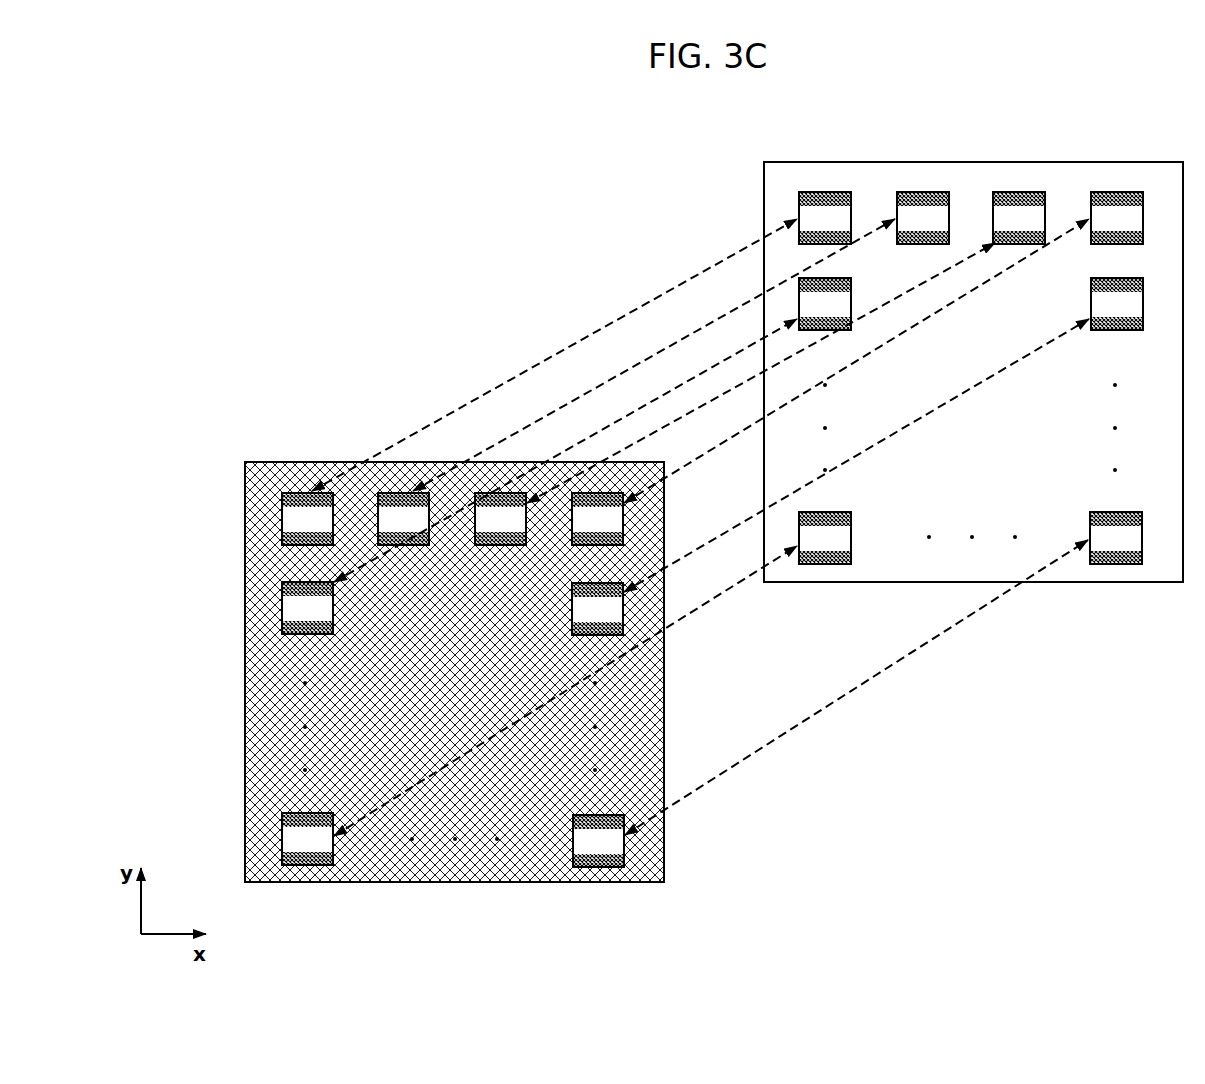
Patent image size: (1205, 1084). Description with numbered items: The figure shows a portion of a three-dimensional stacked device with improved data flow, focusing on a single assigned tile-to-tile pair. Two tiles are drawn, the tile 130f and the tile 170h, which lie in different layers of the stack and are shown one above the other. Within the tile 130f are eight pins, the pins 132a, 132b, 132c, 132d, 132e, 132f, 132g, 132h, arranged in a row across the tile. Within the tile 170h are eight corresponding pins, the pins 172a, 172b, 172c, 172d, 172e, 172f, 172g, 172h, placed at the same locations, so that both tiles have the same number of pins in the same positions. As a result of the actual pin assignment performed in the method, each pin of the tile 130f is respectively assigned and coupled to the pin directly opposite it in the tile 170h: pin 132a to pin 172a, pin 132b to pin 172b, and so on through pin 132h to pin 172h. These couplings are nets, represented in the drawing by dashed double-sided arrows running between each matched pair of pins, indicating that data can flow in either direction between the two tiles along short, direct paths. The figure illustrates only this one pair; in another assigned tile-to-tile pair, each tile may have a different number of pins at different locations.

The tile 130f is at (431, 684).
The tile 170h is at (990, 365).
The pin 132a is at (286, 530).
The pin 132b is at (382, 530).
The pin 132c is at (479, 530).
The pin 132d is at (576, 530).
The pin 132e is at (286, 619).
The pin 132f is at (576, 620).
The pin 132g is at (286, 850).
The pin 132h is at (577, 852).
The pin 172a is at (803, 229).
The pin 172b is at (901, 229).
The pin 172c is at (997, 229).
The pin 172d is at (1095, 229).
The pin 172e is at (803, 315).
The pin 172f is at (1095, 315).
The pin 172g is at (803, 549).
The pin 172h is at (1094, 549).